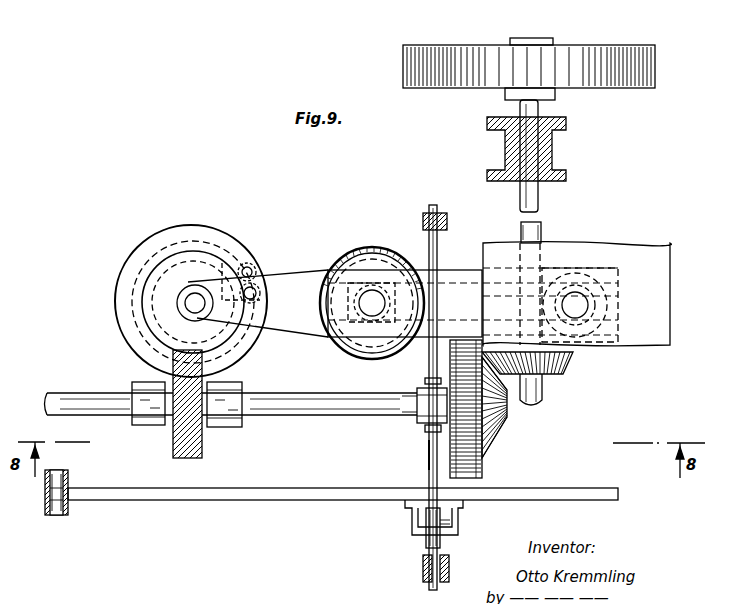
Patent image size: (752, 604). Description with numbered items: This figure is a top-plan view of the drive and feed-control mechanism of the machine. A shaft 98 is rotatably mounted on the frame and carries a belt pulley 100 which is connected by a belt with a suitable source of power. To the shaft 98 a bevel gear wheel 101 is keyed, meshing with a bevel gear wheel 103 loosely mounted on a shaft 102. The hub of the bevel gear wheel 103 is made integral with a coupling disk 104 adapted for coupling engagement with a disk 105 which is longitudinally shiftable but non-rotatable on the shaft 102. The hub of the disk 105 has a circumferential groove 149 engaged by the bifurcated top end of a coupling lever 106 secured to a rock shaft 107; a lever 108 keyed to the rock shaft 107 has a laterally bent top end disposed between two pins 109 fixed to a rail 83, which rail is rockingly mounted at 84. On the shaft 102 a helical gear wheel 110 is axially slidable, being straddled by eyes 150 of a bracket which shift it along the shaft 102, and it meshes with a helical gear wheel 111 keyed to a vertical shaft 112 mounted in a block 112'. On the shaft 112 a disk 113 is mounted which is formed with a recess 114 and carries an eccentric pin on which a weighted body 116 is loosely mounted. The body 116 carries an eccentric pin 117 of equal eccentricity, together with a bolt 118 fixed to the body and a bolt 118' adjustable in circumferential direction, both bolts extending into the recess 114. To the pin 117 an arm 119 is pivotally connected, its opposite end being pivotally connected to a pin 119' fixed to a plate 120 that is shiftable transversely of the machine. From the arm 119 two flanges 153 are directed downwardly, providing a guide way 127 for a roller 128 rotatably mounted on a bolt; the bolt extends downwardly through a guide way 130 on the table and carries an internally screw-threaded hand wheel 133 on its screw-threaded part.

The belt pulley 100 is at (586, 47).
The shaft 98 is at (540, 200).
The plate 120 is at (671, 292).
The flanges 153 is at (528, 292).
The pin 119' is at (604, 305).
The bevel gear wheel 101 is at (573, 364).
The arm 119 is at (335, 314).
The roller 128 is at (348, 300).
The hand wheel 133 is at (357, 352).
The guide way 130 is at (407, 345).
The guide way 127 is at (447, 300).
The weighted body 116 is at (115, 296).
The recess 114 is at (195, 285).
The vertical shaft 112 is at (165, 302).
The disk 113 is at (152, 315).
The eccentric pin 117 is at (195, 315).
The helical gear wheel 111 is at (230, 262).
The bolt 118 is at (268, 264).
The bolt 118' is at (274, 291).
The block 112' is at (155, 397).
The helical gear wheel 110 is at (186, 458).
The shaft 102 is at (336, 417).
The eyes 150 is at (148, 426).
The coupling lever 106 is at (427, 427).
The circumferential groove 149 is at (402, 418).
The disk 105 is at (437, 467).
The coupling disk 104 is at (482, 475).
The bevel gear wheel 103 is at (503, 432).
The rail 83 is at (262, 501).
The rocking mount 84 is at (57, 515).
The lever 108 is at (462, 512).
The rock shaft 107 is at (440, 548).
The pins 109 is at (424, 536).